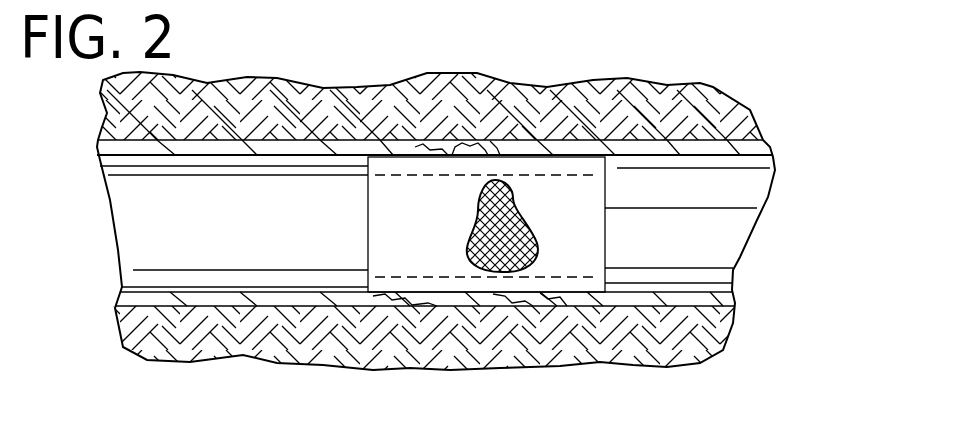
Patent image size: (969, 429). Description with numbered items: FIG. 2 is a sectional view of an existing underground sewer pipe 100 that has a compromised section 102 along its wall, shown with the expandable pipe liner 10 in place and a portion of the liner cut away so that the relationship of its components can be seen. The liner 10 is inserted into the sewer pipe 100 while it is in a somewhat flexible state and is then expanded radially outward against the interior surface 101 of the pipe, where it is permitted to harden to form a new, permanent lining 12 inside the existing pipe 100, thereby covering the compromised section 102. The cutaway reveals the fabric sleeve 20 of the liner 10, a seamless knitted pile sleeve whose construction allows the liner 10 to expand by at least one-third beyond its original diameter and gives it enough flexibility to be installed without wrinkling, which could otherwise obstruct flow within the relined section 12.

The underground sewer pipe 100 is at (205, 147).
The interior surface 101 is at (319, 212).
The expandable pipe liner 10 is at (368, 165).
The permanent lining 12 is at (358, 283).
The compromised section 102 is at (477, 150).
The fabric sleeve 20 is at (510, 226).